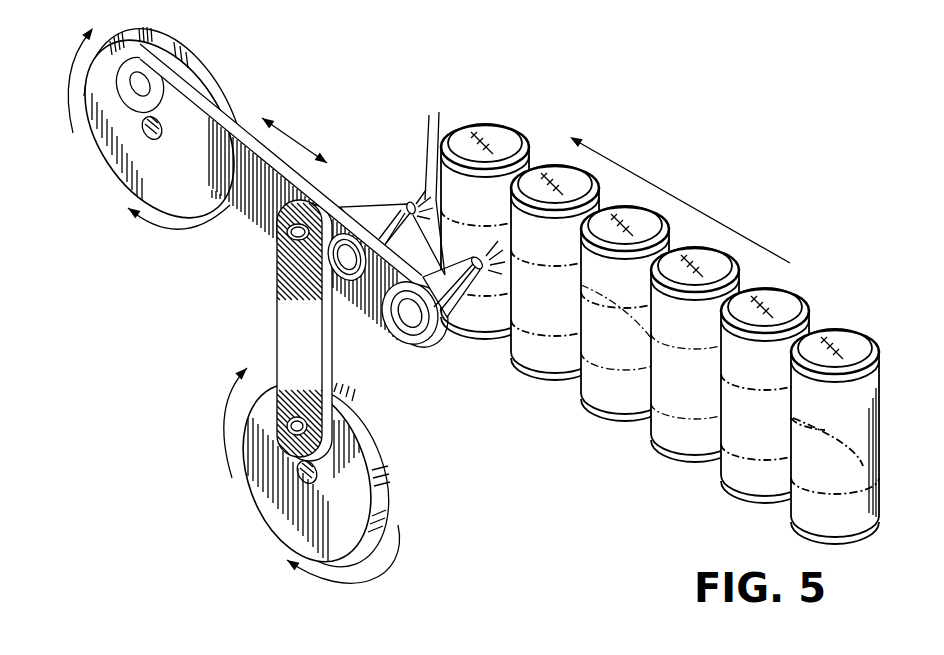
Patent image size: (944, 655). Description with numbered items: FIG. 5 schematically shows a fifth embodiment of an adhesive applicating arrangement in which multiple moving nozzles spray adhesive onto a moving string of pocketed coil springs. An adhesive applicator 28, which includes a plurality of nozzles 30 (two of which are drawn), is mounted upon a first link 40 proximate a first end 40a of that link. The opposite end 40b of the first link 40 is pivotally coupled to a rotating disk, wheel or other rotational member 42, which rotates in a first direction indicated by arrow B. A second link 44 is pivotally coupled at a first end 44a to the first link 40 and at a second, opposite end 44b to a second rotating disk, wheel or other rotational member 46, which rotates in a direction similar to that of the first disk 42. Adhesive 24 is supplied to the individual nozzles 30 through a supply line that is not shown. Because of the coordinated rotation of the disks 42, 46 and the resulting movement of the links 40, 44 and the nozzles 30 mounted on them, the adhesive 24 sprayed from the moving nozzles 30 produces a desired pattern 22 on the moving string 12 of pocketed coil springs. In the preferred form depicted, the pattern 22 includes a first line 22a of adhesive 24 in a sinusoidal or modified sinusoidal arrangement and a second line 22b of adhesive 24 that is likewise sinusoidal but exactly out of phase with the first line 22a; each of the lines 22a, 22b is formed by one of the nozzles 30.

The string of pocketed coil springs 12 is at (660, 315).
The pattern 22 is at (664, 416).
The first line of adhesive 22a is at (604, 366).
The second line of adhesive 22b is at (608, 313).
The adhesive 24 is at (428, 115).
The adhesive applicator 28 is at (434, 358).
The nozzles 30 is at (410, 196).
The first link 40 is at (279, 296).
The first end of the first link 40a is at (420, 350).
The opposite end of the first link 40b is at (185, 72).
The rotational member 42 is at (159, 126).
The second link 44 is at (327, 365).
The first end of the second link 44a is at (277, 232).
The second opposite end of the second link 44b is at (278, 360).
The second rotational member 46 is at (316, 475).